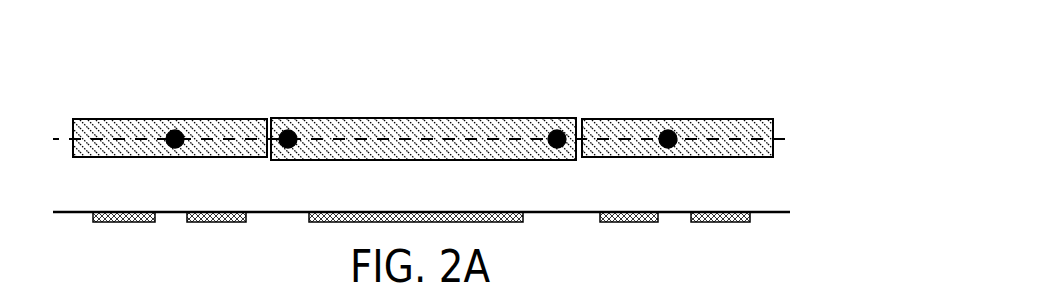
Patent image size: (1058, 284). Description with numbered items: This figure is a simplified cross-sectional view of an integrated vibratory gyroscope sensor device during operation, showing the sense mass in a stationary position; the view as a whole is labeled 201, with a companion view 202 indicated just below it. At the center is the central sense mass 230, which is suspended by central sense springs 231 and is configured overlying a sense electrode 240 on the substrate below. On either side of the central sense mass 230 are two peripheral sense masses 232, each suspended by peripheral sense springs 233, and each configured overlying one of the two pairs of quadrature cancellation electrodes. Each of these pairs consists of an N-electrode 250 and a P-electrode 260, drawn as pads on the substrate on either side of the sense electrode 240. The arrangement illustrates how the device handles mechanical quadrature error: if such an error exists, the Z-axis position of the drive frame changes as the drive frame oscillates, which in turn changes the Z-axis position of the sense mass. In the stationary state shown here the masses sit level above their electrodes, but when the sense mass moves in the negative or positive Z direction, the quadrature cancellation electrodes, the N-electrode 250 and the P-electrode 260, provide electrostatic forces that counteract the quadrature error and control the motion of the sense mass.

The antenna assembly 201 is at (681, 34).
The antenna assembly 202 is at (712, 283).
The central sense mass 230 is at (398, 118).
The central sense springs 231 is at (291, 128).
The peripheral sense masses 232 is at (95, 119).
The peripheral sense springs 233 is at (180, 128).
The sense electrode 240 is at (418, 212).
The N-electrode 250 is at (124, 212).
The P-electrode 260 is at (213, 212).